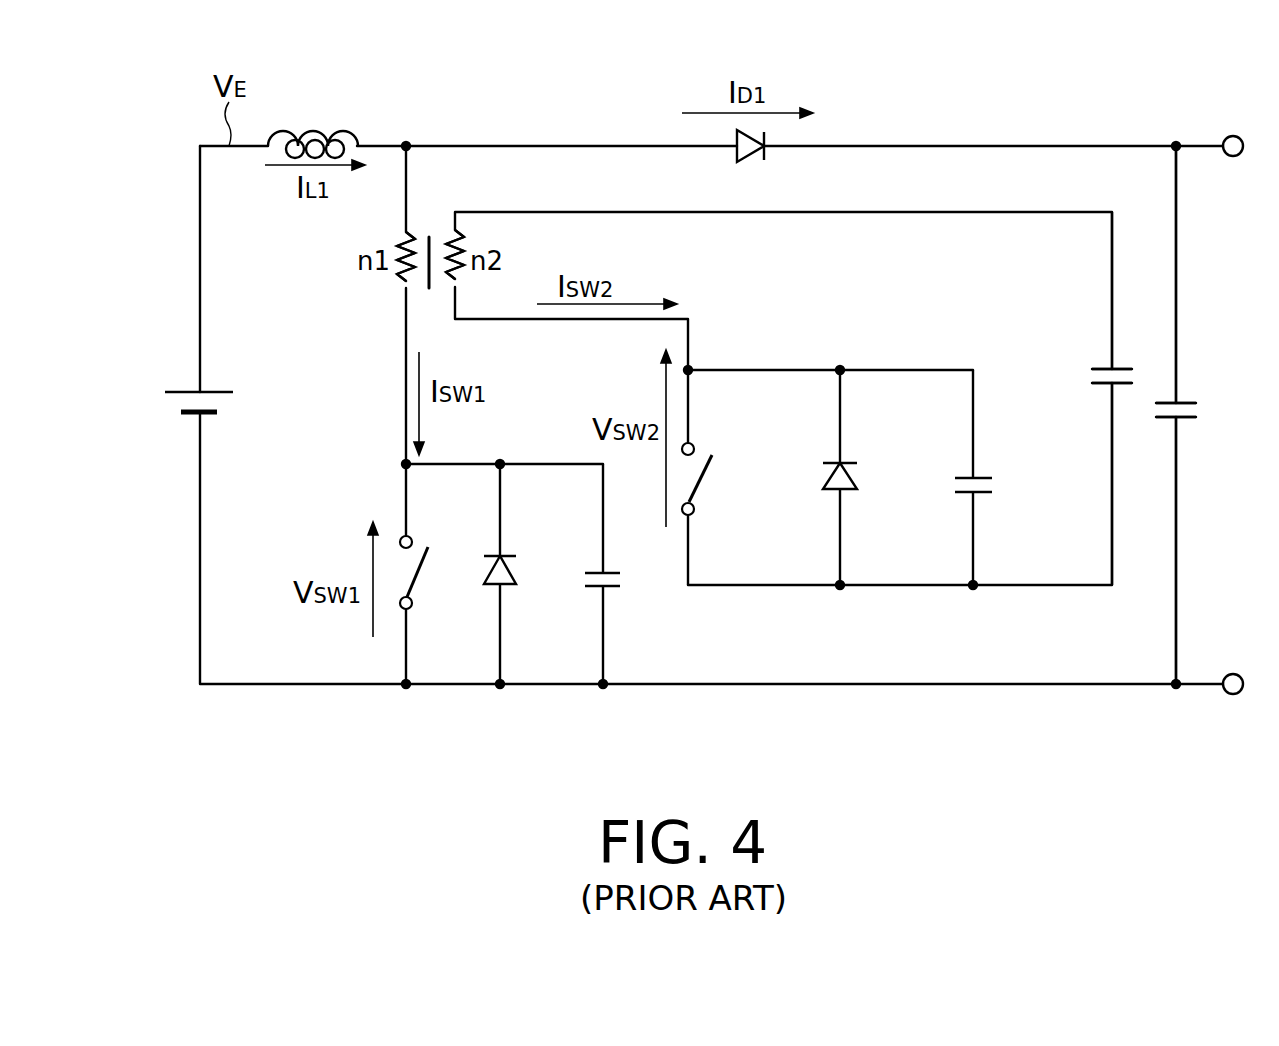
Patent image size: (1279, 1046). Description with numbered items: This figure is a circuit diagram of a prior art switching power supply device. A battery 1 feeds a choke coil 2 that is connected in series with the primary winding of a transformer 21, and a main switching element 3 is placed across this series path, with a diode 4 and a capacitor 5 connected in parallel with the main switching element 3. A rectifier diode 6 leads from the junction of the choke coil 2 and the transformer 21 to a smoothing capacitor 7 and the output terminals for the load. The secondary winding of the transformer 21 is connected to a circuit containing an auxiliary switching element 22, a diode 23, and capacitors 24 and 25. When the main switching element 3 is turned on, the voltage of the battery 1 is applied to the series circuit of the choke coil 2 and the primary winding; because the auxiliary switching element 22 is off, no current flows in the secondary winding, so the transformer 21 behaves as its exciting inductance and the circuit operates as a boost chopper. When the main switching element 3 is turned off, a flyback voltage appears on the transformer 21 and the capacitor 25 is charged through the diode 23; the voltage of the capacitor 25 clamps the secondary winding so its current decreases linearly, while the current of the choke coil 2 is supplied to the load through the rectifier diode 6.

The battery 1 is at (183, 392).
The choke coil 2 is at (315, 130).
The transformer 21 is at (433, 231).
The main switching element 3 is at (418, 544).
The diode 4 is at (518, 568).
The capacitor 5 is at (608, 573).
The rectifier diode 6 is at (748, 155).
The smoothing capacitor 7 is at (1182, 403).
The auxiliary switching element 22 is at (702, 450).
The diode 23 is at (856, 472).
The capacitor 24 is at (978, 478).
The capacitor 25 is at (1118, 369).